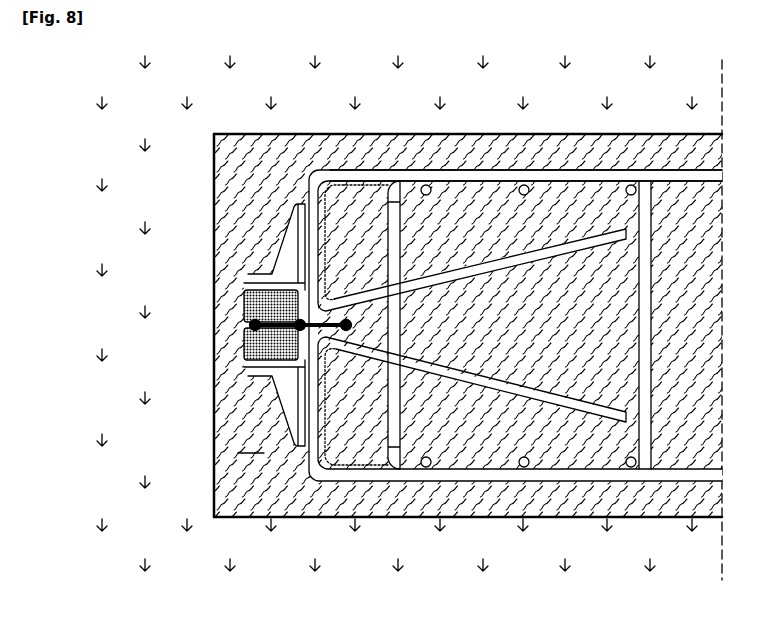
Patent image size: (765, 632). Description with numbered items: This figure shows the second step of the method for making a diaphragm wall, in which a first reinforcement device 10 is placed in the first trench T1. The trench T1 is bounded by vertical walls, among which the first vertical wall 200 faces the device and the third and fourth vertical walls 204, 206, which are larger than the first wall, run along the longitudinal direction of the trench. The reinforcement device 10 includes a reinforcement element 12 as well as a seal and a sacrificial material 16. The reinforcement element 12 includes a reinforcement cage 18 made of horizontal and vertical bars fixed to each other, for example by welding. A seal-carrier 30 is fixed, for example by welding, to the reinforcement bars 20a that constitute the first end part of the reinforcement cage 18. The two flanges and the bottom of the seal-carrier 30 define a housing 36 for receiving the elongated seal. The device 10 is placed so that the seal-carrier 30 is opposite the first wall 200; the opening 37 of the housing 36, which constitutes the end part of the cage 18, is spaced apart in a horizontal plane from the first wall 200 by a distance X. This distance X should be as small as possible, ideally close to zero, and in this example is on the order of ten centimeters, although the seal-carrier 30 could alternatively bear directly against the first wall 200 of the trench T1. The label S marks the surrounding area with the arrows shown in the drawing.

The first vertical wall 200 is at (226, 152).
The third vertical wall 204 is at (468, 156).
The fourth vertical wall 206 is at (468, 500).
The reinforcement device 10 is at (340, 152).
The reinforcement cage 18 is at (638, 166).
The reinforcement bars 20a is at (320, 238).
The reinforcement element 12 is at (612, 310).
The sacrificial material 16 is at (262, 247).
The seal-carrier 30 is at (250, 372).
The housing 36 is at (243, 292).
The opening 37 is at (243, 355).
The distance X is at (246, 325).
The first trench T1 is at (251, 443).
The load S is at (246, 100).